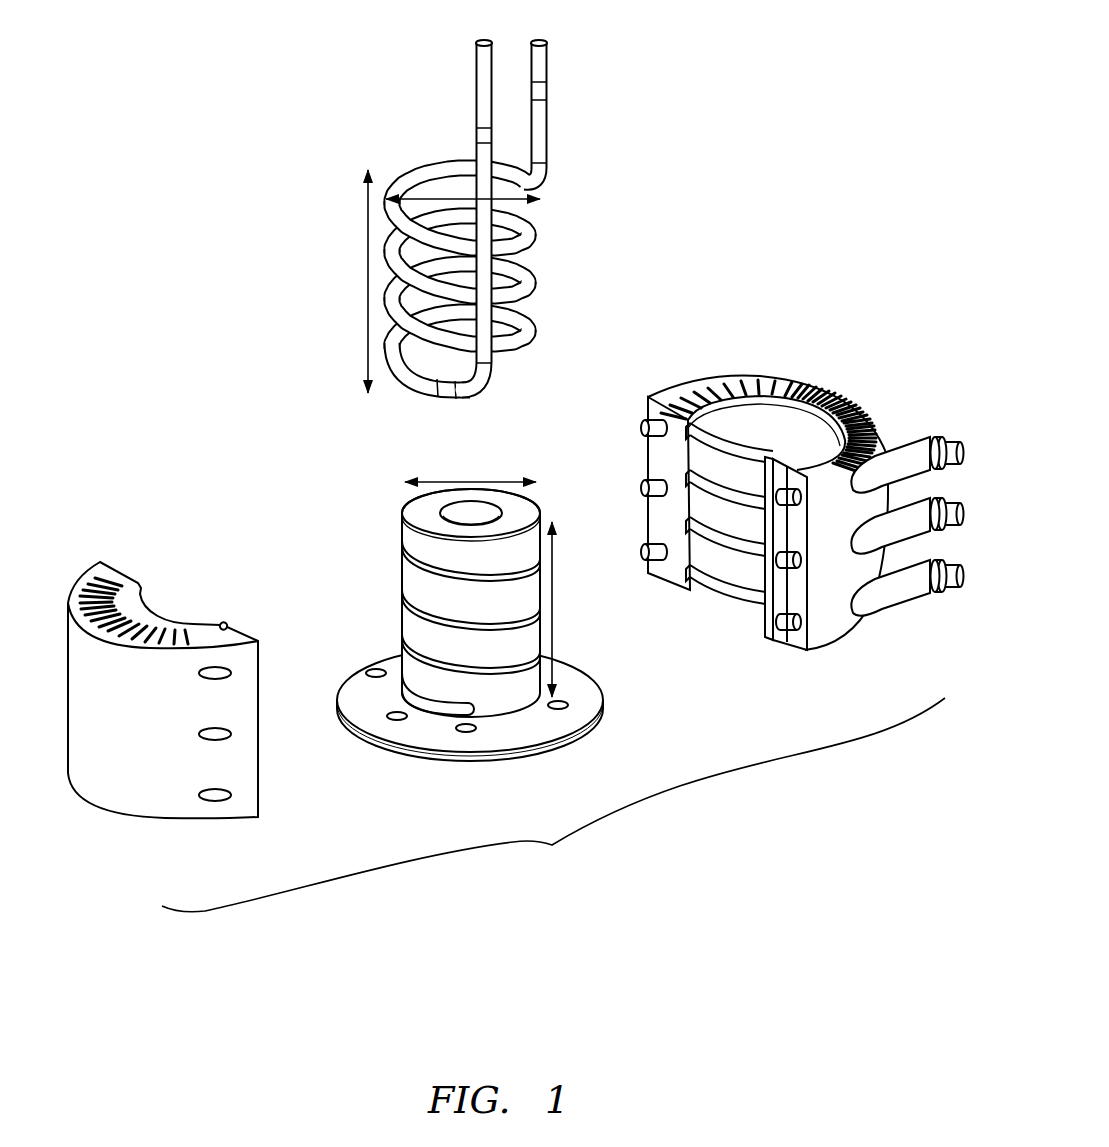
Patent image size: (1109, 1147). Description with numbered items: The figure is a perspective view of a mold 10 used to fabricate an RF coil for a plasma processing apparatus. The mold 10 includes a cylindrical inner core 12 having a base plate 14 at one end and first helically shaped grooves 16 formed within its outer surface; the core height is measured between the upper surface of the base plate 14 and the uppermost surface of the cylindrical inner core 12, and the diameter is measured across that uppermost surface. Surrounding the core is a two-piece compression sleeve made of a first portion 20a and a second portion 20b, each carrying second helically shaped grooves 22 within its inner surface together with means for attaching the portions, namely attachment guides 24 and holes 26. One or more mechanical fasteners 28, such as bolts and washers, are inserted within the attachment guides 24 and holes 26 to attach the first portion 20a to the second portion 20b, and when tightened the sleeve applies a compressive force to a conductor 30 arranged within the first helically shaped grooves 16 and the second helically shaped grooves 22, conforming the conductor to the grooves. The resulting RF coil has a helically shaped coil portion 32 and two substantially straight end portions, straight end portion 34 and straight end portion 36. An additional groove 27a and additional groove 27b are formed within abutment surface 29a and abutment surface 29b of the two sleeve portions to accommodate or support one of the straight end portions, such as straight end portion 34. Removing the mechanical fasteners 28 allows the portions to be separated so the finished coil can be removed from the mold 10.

The mold 10 is at (553, 805).
The cylindrical inner core 12 is at (355, 505).
The base plate 14 is at (399, 744).
The first helically shaped grooves 16 is at (403, 587).
The first portion 20a is at (687, 378).
The second portion 20b is at (127, 568).
The second helically shaped grooves 22 is at (716, 563).
The attachment guides 24 is at (907, 588).
The holes 26 is at (216, 734).
The additional groove 27a is at (770, 617).
The additional groove 27b is at (237, 626).
The mechanical fasteners 28 is at (947, 434).
The abutment surface 29a is at (796, 645).
The abutment surface 29b is at (262, 676).
The conductor 30 is at (628, 90).
The helically shaped coil portion 32 is at (449, 164).
The straight end portion 34 is at (471, 54).
The straight end portion 36 is at (549, 41).